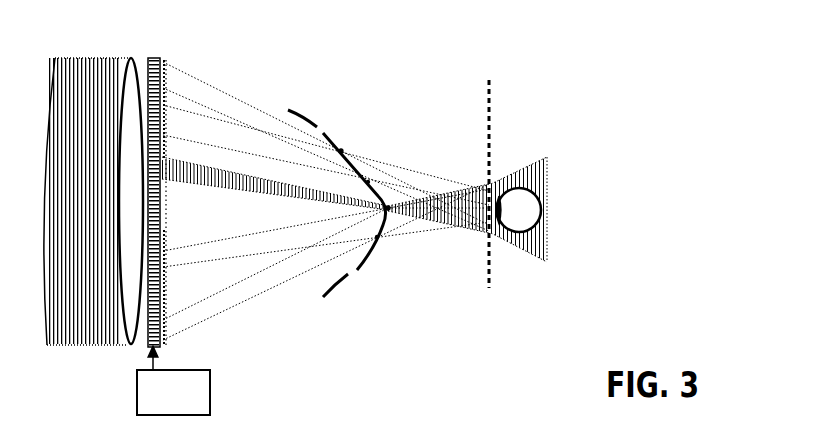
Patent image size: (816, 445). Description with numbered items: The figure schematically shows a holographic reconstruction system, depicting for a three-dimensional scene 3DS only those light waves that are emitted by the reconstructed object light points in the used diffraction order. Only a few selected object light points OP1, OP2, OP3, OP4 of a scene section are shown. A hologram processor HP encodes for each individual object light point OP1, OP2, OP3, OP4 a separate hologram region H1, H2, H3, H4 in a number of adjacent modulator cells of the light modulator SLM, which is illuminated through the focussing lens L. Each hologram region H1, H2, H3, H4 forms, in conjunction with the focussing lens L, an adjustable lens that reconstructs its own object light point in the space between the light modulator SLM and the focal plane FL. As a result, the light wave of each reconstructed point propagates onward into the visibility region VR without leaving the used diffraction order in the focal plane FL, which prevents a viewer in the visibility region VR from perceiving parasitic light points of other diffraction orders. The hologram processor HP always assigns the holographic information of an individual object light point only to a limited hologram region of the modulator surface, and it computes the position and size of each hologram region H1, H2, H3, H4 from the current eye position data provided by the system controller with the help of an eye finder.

The focussing lens L is at (93, 185).
The light modulator SLM is at (170, 186).
The hologram processor HP is at (173, 380).
The hologram region H1 is at (168, 323).
The hologram region H2 is at (168, 232).
The hologram region H3 is at (165, 127).
The hologram region H4 is at (165, 75).
The three-dimensional scene 3DS is at (337, 184).
The object light point OP1 is at (376, 240).
The object light point OP2 is at (390, 211).
The object light point OP3 is at (375, 180).
The object light point OP4 is at (373, 142).
The focal plane FL is at (510, 183).
The visibility region VR is at (467, 222).